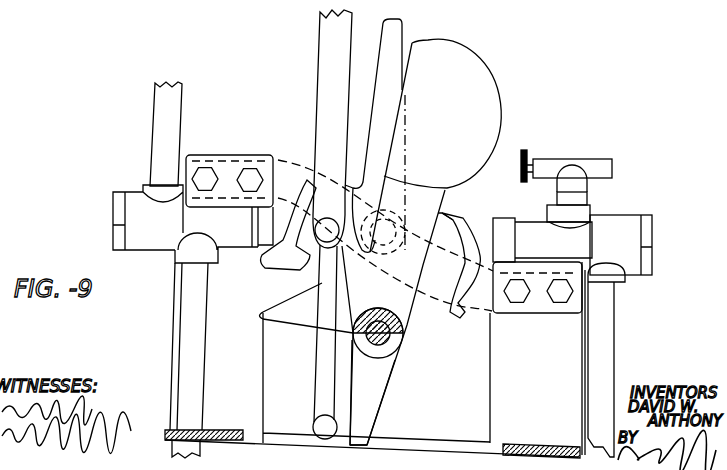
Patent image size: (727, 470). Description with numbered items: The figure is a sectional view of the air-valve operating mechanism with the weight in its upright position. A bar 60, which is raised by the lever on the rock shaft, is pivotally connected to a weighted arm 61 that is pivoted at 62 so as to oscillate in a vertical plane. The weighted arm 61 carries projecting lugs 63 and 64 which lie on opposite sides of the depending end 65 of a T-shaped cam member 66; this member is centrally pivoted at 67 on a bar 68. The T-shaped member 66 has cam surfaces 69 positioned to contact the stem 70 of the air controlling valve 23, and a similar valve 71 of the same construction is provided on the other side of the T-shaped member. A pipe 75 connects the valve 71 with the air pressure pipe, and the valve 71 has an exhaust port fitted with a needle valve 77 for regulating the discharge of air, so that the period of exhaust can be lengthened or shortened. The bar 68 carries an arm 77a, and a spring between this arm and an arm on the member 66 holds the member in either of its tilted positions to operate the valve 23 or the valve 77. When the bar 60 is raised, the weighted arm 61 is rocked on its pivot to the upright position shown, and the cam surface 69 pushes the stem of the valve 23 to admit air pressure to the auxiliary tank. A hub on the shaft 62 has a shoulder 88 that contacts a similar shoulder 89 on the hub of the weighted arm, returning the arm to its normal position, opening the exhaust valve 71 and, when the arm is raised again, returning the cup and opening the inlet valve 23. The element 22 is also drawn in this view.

The vertical bar 22 is at (162, 136).
The air controlling valve 23 is at (193, 307).
The bar 60 is at (332, 129).
The weighted arm 61 is at (435, 145).
The pivot 62 is at (400, 350).
The projecting lug 63 is at (365, 432).
The projecting lug 64 is at (307, 308).
The depending end 65 is at (318, 422).
The T-shaped cam member 66 is at (443, 226).
The pivot 67 is at (374, 221).
The bar 68 is at (283, 170).
The cam surfaces 69 is at (302, 205).
The valve stem 70 is at (257, 252).
The valve 71 is at (620, 248).
The pipe 75 is at (608, 308).
The needle valve 77 is at (528, 162).
The arm 77a is at (397, 32).
The shoulder 88 is at (392, 325).
The shoulder 89 is at (353, 333).